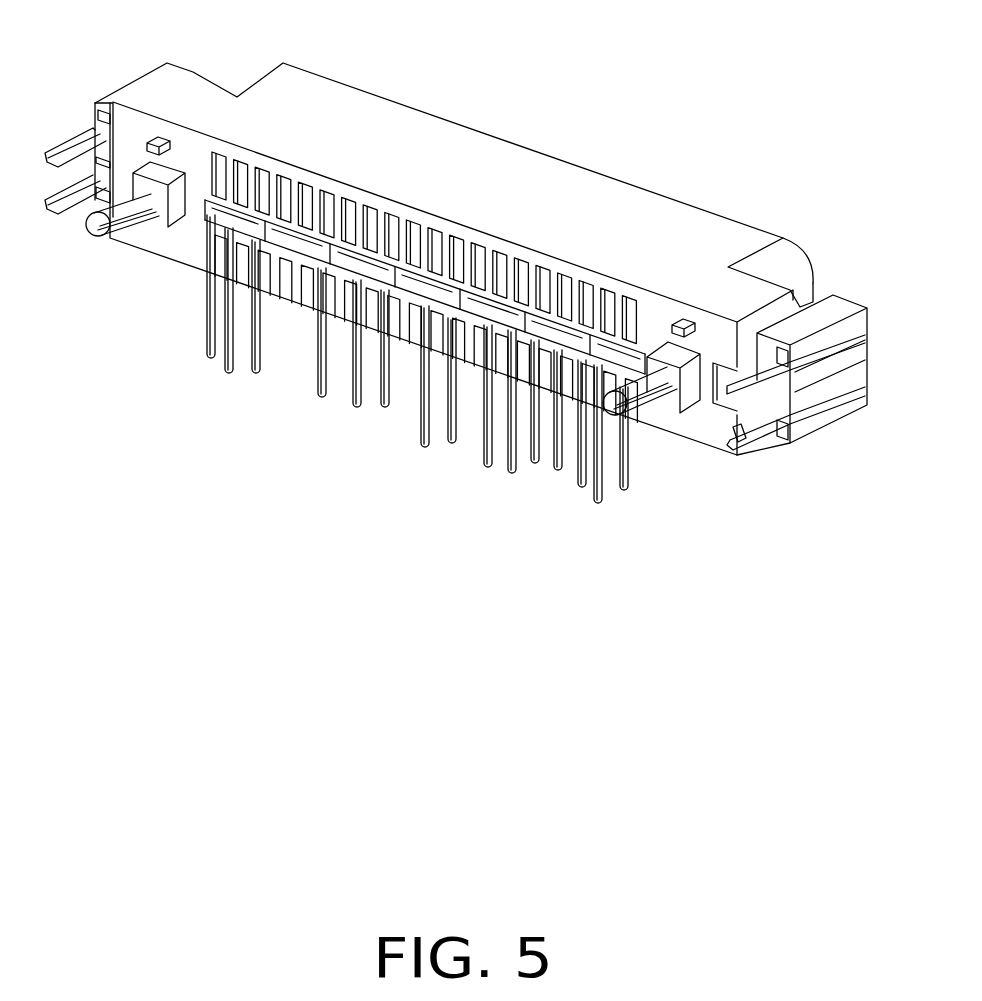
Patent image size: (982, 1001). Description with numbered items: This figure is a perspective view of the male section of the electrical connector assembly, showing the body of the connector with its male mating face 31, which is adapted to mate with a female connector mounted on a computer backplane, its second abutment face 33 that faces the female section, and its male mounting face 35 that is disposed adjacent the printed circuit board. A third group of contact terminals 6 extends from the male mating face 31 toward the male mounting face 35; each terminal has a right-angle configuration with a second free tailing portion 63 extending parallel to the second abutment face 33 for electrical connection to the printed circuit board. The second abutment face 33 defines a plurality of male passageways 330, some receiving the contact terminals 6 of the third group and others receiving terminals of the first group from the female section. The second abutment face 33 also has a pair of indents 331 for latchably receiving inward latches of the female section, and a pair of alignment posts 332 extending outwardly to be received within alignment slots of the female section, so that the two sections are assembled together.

The male mating face 31 is at (708, 210).
The male passageways 330 is at (627, 300).
The contact terminals 6 is at (447, 262).
The second free tailing portion 63 is at (425, 403).
The second abutment face 33 is at (708, 428).
The indents 331 is at (88, 168).
The alignment posts 332 is at (140, 200).
The male mounting face 35 is at (757, 450).